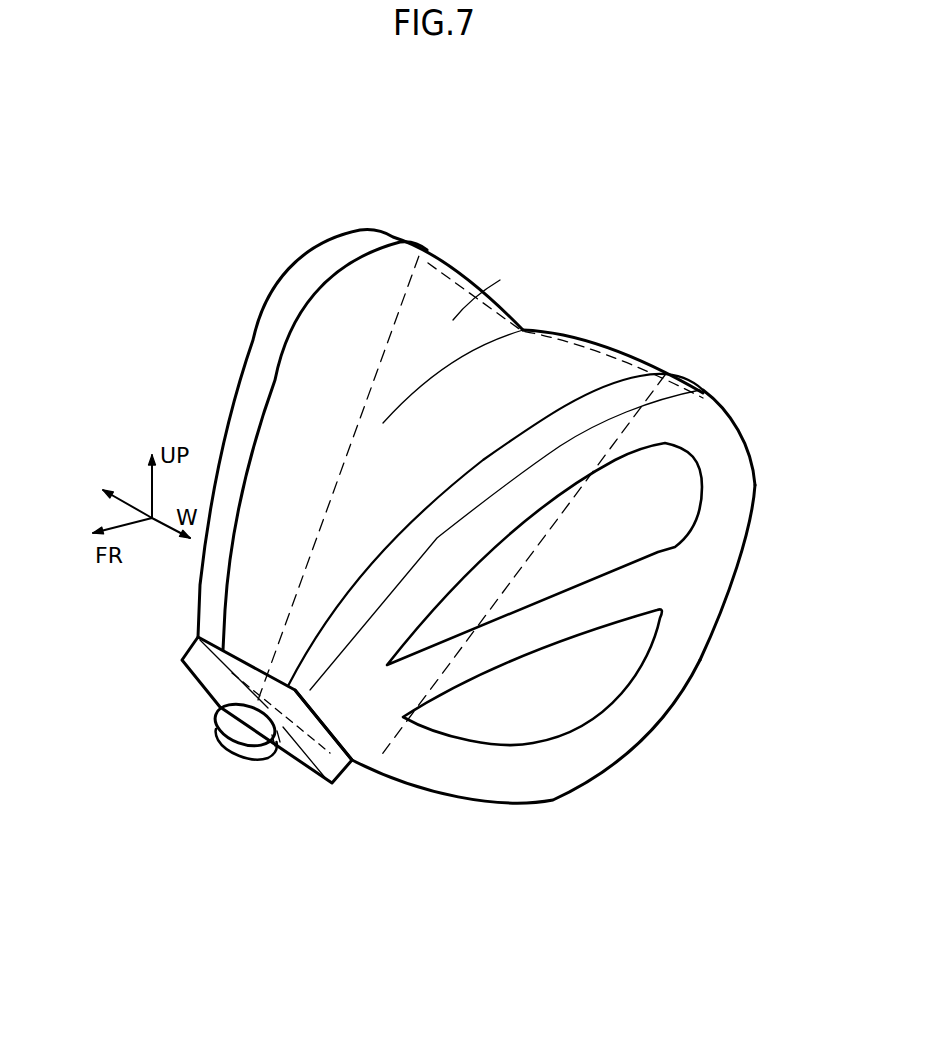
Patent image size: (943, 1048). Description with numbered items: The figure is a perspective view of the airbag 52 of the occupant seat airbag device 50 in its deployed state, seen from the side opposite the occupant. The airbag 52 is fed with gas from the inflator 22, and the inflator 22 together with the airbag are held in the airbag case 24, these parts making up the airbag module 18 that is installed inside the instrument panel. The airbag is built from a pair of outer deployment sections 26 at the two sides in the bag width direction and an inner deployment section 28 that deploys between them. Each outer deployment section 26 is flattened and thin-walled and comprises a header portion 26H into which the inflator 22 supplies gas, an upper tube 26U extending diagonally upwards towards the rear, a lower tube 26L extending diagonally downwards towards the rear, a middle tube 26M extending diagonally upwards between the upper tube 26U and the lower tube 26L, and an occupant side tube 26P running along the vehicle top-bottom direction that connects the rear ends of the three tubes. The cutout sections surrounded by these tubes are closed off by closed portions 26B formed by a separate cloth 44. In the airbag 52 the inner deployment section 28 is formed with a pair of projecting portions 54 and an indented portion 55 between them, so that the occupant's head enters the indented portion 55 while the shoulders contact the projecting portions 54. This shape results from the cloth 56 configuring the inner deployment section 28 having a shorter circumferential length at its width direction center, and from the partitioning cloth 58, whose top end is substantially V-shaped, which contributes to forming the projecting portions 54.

The airbag module 18 is at (285, 777).
The inflator 22 is at (233, 733).
The airbag case 24 is at (207, 693).
The outer deployment section 26 is at (375, 229).
The upper tube 26U is at (510, 497).
The header portion 26H is at (342, 668).
The occupant side tube 26P is at (702, 590).
The middle tube 26M is at (587, 607).
The closed portion 26B is at (533, 587).
The cloth 44 is at (503, 735).
The lower tube 26L is at (590, 770).
The inner deployment section 28 is at (650, 362).
The occupant seat airbag device 50 is at (753, 213).
The airbag 52 is at (667, 247).
The projecting portion 54 is at (440, 278).
The indented portion 55 is at (528, 327).
The cloth 56 is at (333, 290).
The partitioning cloth 58 is at (500, 280).